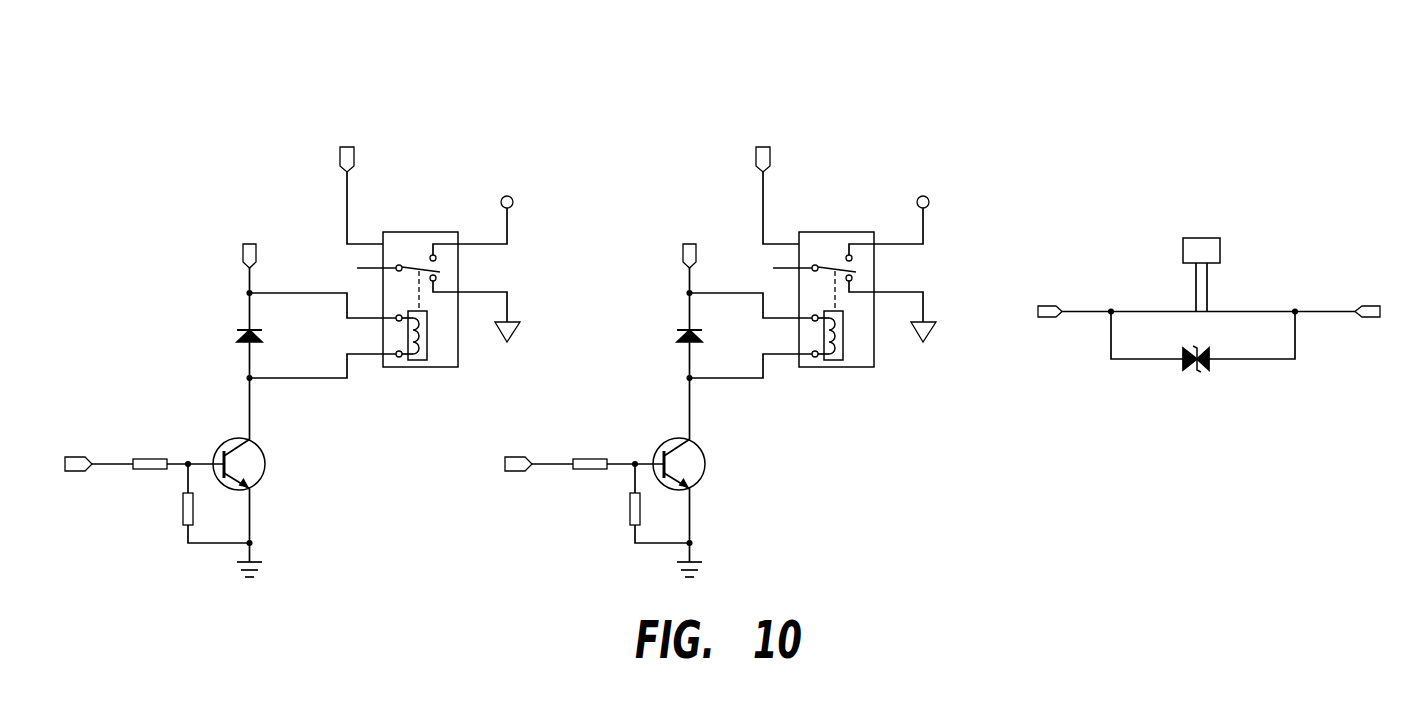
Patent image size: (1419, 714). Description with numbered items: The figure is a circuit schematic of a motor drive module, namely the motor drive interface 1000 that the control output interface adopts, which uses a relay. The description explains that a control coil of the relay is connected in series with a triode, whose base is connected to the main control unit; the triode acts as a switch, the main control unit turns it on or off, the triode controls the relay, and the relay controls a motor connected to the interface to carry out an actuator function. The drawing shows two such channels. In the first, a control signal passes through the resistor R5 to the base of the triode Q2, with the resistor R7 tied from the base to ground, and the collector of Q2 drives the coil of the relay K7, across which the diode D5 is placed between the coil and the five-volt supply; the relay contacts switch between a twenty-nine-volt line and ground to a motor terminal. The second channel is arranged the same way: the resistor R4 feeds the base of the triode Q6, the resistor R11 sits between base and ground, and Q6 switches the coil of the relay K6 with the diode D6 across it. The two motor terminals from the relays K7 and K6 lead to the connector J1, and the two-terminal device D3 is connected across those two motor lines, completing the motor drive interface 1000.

The motor drive interface 1000 is at (523, 90).
The transistor 8050 Q2 is at (260, 464).
The resistor 1K R5 is at (150, 464).
The resistor 10K R7 is at (177, 509).
The diode M7 D5 is at (241, 327).
The relay RL11-5V K7 is at (414, 292).
The transistor 8050 Q6 is at (700, 464).
The resistor 1K R4 is at (590, 464).
The resistor 10K R11 is at (623, 509).
The diode M7 D6 is at (681, 327).
The relay RL11-5V K6 is at (830, 292).
The TVS diode TVS33 D3 is at (1204, 351).
The connector CON2 J1 is at (1186, 273).